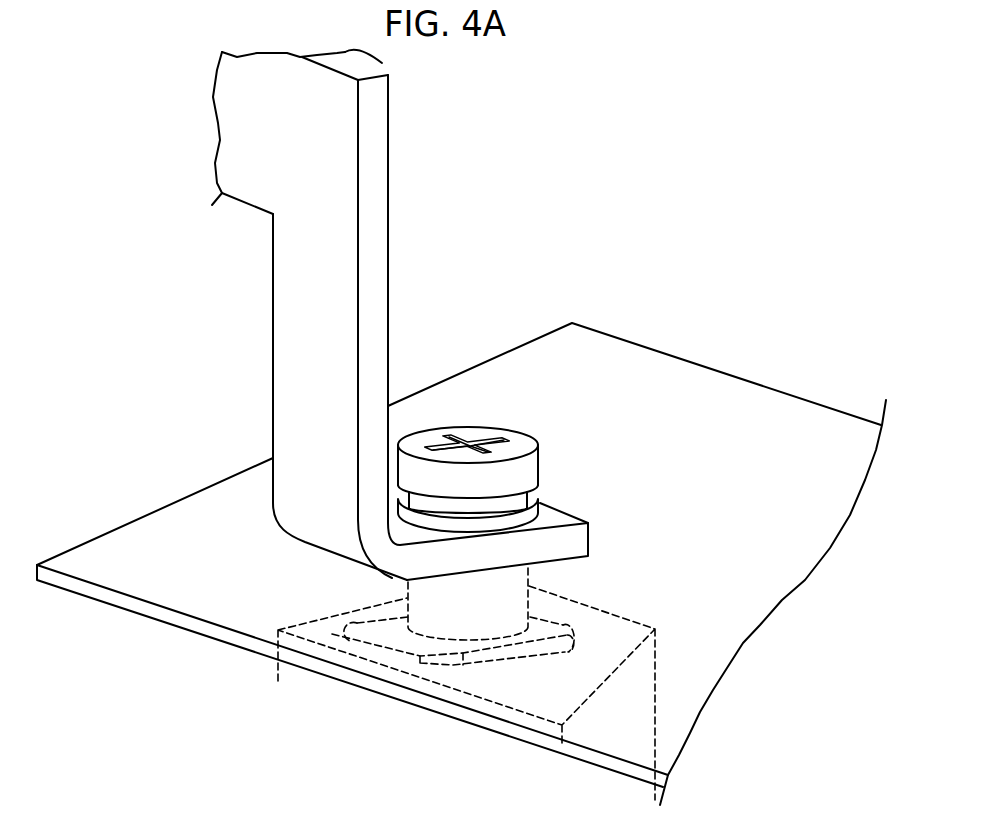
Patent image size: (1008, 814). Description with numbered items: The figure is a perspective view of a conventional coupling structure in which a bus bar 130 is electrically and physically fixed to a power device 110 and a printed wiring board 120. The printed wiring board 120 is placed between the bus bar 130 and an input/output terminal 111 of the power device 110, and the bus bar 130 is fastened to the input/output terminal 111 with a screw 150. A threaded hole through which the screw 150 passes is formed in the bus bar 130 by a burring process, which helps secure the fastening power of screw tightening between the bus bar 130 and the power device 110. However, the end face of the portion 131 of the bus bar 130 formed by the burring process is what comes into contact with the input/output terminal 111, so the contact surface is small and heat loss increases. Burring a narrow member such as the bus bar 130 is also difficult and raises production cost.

The power device 110 is at (655, 629).
The input/output terminal 111 is at (598, 612).
The printed wiring board 120 is at (597, 346).
The bus bar 130 is at (378, 232).
The portion formed by the burring process 131 is at (531, 573).
The screw 150 is at (518, 434).